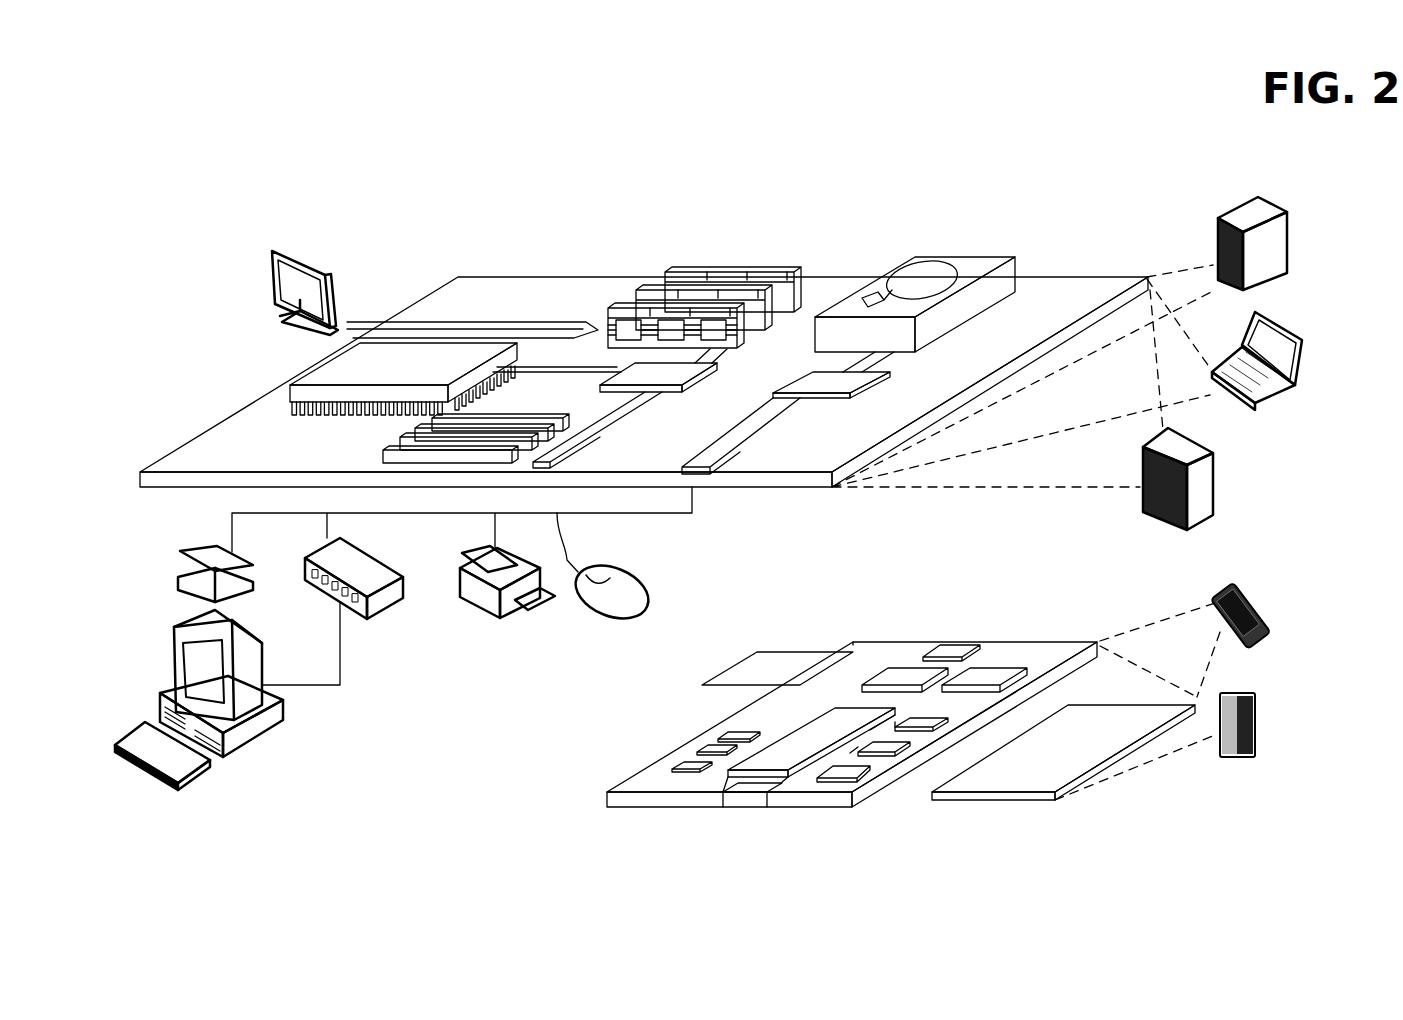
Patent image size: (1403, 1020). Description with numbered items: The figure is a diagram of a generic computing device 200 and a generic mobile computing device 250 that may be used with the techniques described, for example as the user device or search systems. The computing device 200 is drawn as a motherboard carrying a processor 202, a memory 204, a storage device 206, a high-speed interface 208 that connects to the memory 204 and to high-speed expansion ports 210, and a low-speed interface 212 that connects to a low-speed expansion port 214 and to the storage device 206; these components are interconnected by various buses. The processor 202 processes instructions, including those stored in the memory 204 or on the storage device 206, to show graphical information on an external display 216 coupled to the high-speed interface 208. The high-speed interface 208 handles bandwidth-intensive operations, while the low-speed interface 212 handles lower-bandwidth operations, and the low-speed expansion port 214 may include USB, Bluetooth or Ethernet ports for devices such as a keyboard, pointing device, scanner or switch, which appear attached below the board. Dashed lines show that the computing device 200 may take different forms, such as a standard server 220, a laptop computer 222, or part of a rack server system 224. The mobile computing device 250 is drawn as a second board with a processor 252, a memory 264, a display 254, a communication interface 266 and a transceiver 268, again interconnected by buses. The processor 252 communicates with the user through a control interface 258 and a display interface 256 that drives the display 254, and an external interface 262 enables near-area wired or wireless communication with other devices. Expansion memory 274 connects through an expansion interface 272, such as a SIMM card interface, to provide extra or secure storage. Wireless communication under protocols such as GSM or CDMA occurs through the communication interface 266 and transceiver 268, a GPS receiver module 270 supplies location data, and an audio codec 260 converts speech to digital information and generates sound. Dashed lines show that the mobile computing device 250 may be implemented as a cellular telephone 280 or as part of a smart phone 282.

The generic computing device 200 is at (232, 93).
The processor 202 is at (307, 367).
The memory 204 is at (713, 270).
The storage device 206 is at (915, 259).
The high-speed interface 208 is at (660, 393).
The high-speed expansion ports 210 is at (383, 450).
The low-speed interface 212 is at (805, 378).
The low-speed expansion port 214 is at (694, 462).
The display 216 is at (282, 250).
The server computer 220 is at (1228, 211).
The laptop computer 222 is at (1293, 392).
The rack server system 224 is at (1213, 478).
The generic mobile computing device 250 is at (565, 819).
The processor 252 is at (792, 737).
The display 254 is at (1120, 705).
The display interface 256 is at (855, 779).
The control interface 258 is at (895, 752).
The audio codec 260 is at (948, 722).
The external interface 262 is at (743, 808).
The memory 264 is at (697, 757).
The communication interface 266 is at (897, 665).
The transceiver 268 is at (993, 665).
The GPS receiver module 270 is at (956, 643).
The expansion interface 272 is at (848, 648).
The expansion memory 274 is at (760, 652).
The cellular telephone 280 is at (1223, 585).
The smart phone 282 is at (1238, 691).